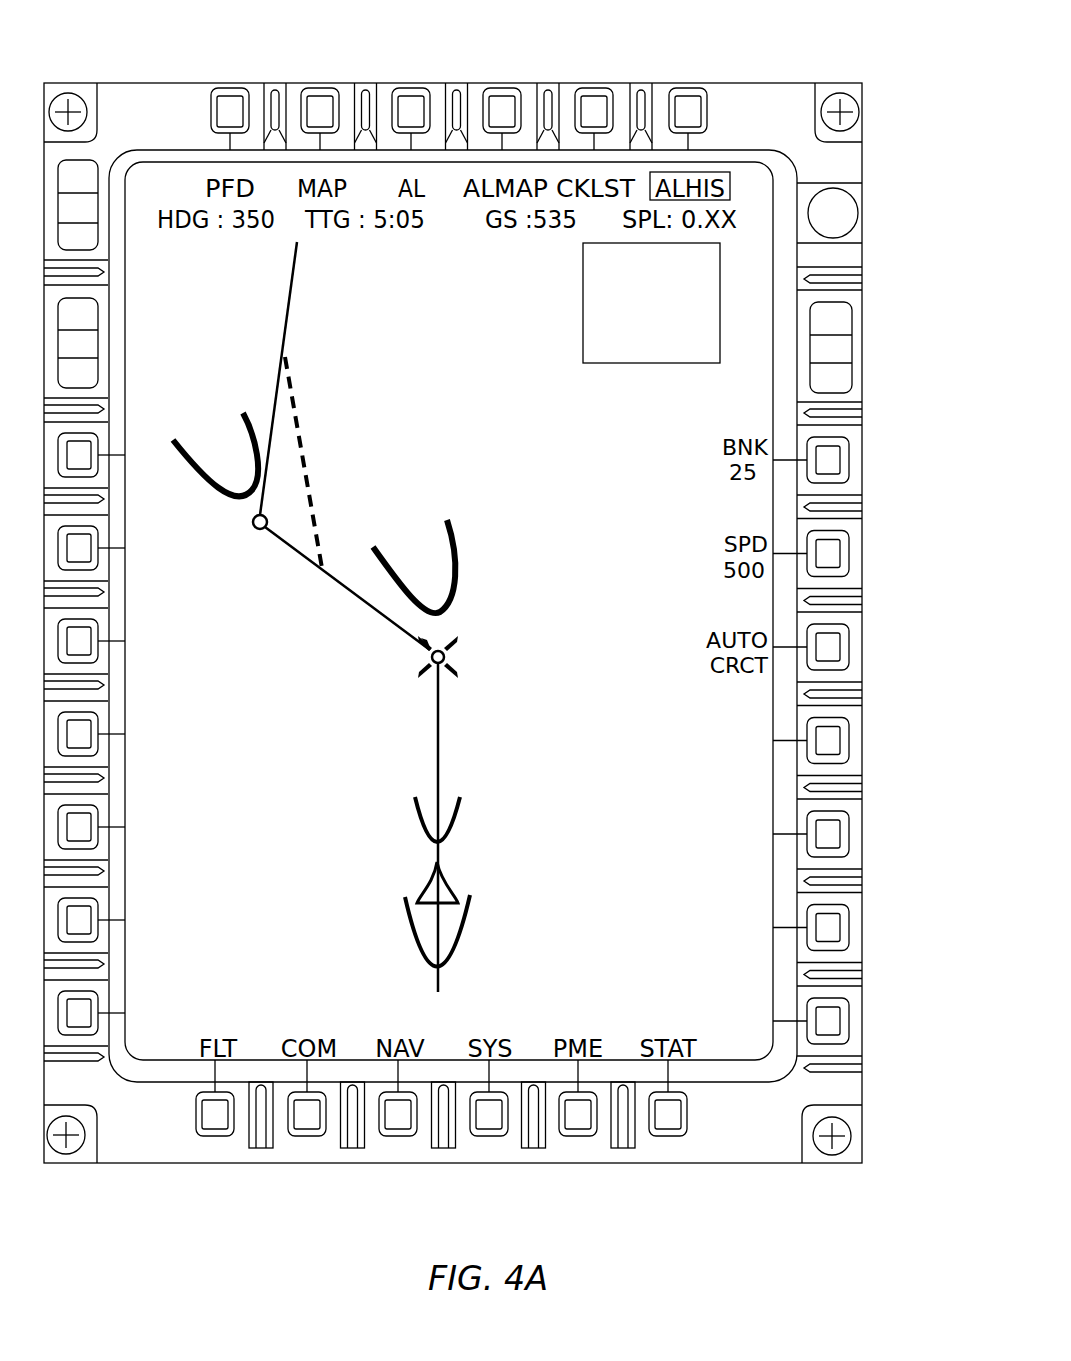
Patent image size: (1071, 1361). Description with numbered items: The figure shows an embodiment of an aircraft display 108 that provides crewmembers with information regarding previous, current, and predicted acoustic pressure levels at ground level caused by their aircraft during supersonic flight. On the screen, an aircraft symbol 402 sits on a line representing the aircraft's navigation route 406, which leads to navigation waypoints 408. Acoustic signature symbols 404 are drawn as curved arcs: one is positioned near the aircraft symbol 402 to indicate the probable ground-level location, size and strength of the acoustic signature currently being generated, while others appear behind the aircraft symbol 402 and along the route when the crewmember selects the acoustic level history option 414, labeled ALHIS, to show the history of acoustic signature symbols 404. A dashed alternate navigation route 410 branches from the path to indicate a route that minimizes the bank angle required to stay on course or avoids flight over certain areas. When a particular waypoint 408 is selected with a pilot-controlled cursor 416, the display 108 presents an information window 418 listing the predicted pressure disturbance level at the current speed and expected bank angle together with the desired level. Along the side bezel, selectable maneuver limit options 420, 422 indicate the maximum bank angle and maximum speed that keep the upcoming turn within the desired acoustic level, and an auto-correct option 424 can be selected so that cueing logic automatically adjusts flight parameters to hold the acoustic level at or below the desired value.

The display 108 is at (832, 55).
The aircraft symbol 402 is at (440, 868).
The acoustic signature symbols 404 is at (222, 500).
The navigation route 406 is at (441, 740).
The navigation waypoints 408 is at (444, 655).
The alternate navigation route 410 is at (310, 500).
The acoustic level history option 414 is at (690, 106).
The pilot-controlled cursor 416 is at (457, 643).
The information window 418 is at (632, 363).
The maneuver limit option 420 is at (843, 458).
The maneuver limit option 422 is at (843, 552).
The auto-correct option 424 is at (843, 645).